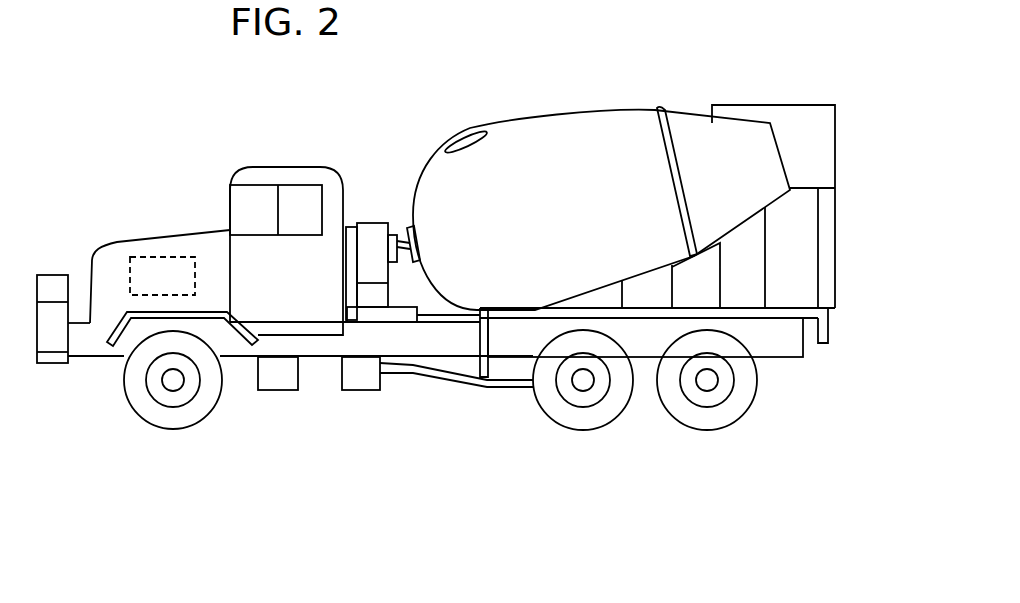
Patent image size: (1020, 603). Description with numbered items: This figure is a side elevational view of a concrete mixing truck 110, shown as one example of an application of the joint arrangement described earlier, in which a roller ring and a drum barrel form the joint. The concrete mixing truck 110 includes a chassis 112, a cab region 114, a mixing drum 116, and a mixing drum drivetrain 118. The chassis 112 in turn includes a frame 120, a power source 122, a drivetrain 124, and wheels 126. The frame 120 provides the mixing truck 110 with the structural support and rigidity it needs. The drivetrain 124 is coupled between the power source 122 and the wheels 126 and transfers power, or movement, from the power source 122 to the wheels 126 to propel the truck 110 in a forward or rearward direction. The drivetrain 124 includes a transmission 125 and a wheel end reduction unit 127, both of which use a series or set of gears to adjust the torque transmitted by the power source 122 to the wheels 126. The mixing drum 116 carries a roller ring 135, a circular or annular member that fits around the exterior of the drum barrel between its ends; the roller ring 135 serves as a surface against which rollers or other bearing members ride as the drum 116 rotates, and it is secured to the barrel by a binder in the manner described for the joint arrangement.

The concrete mixing truck 110 is at (343, 120).
The chassis 112 is at (445, 400).
The cab region 114 is at (214, 221).
The mixing drum 116 is at (543, 114).
The mixing drum drivetrain 118 is at (370, 223).
The frame 120 is at (413, 343).
The power source 122 is at (163, 268).
The drivetrain 124 is at (506, 388).
The transmission 125 is at (360, 383).
The wheels 126 is at (178, 418).
The wheel end reduction unit 127 is at (607, 397).
The roller ring 135 is at (690, 228).